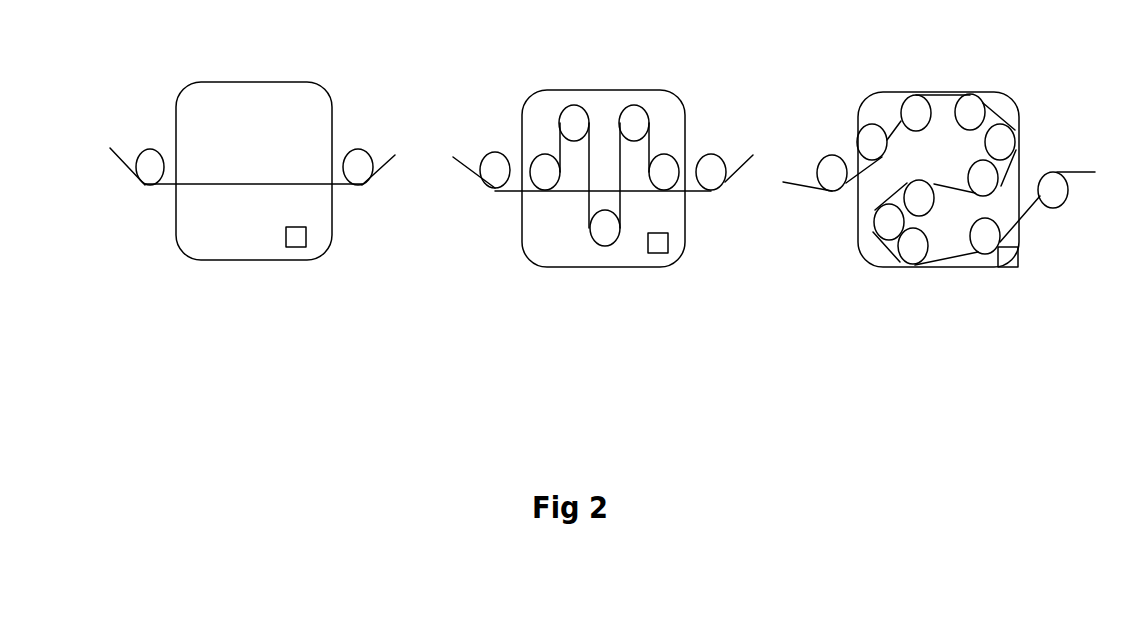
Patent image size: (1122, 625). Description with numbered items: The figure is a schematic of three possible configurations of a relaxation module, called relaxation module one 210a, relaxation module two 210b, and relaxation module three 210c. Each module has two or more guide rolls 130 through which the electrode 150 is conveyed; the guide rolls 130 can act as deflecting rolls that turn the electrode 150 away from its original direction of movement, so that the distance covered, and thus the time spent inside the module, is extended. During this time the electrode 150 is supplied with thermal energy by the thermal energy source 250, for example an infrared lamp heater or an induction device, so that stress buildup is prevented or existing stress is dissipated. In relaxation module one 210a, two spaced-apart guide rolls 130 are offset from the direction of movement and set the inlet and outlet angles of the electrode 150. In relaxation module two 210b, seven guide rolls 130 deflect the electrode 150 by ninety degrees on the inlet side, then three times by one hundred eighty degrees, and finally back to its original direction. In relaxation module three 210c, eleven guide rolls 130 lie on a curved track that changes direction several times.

The guide roll 130 is at (497, 190).
The electrode 150 is at (466, 163).
The relaxation module one 210a is at (203, 255).
The relaxation module two 210b is at (570, 258).
The relaxation module three 210c is at (885, 263).
The thermal energy source 250 is at (292, 238).